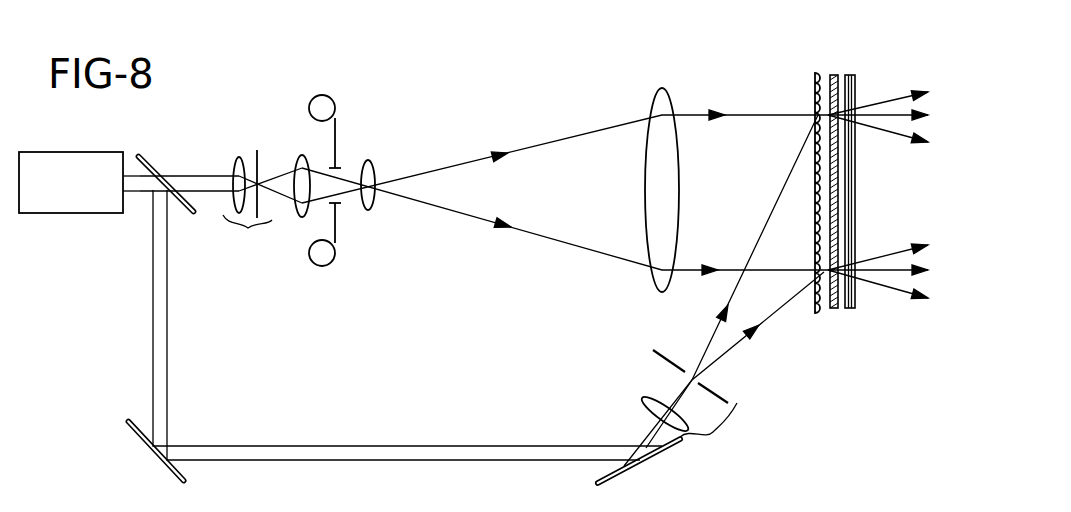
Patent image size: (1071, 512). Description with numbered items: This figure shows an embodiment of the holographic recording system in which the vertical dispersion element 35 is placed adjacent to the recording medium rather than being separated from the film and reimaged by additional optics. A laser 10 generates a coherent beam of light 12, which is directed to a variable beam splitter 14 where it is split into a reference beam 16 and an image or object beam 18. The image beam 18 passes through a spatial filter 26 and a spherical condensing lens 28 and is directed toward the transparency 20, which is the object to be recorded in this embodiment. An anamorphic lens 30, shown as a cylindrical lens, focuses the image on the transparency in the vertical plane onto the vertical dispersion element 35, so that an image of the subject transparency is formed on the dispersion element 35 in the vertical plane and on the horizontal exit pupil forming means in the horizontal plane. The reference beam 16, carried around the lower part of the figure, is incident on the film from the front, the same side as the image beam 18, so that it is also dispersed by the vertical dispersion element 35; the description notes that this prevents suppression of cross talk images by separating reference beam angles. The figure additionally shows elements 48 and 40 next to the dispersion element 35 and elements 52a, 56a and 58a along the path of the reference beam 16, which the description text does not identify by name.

The laser 10 is at (59, 162).
The coherent beam of light 12 is at (125, 186).
The variable beam splitter 14 is at (160, 172).
The reference beam 16 is at (153, 318).
The image beam 18 is at (196, 175).
The transparency 20 is at (337, 127).
The spatial filter 26 is at (248, 228).
The spherical condensing lens 28 is at (300, 165).
The anamorphic lens 30 is at (658, 108).
The vertical dispersion element 35 is at (813, 92).
The display panel 40 is at (848, 75).
The diffusing layer 48 is at (832, 76).
The mirror 52a is at (152, 448).
The mirror 56a is at (638, 462).
The spatial filter (lens and aperture) 58a is at (718, 434).